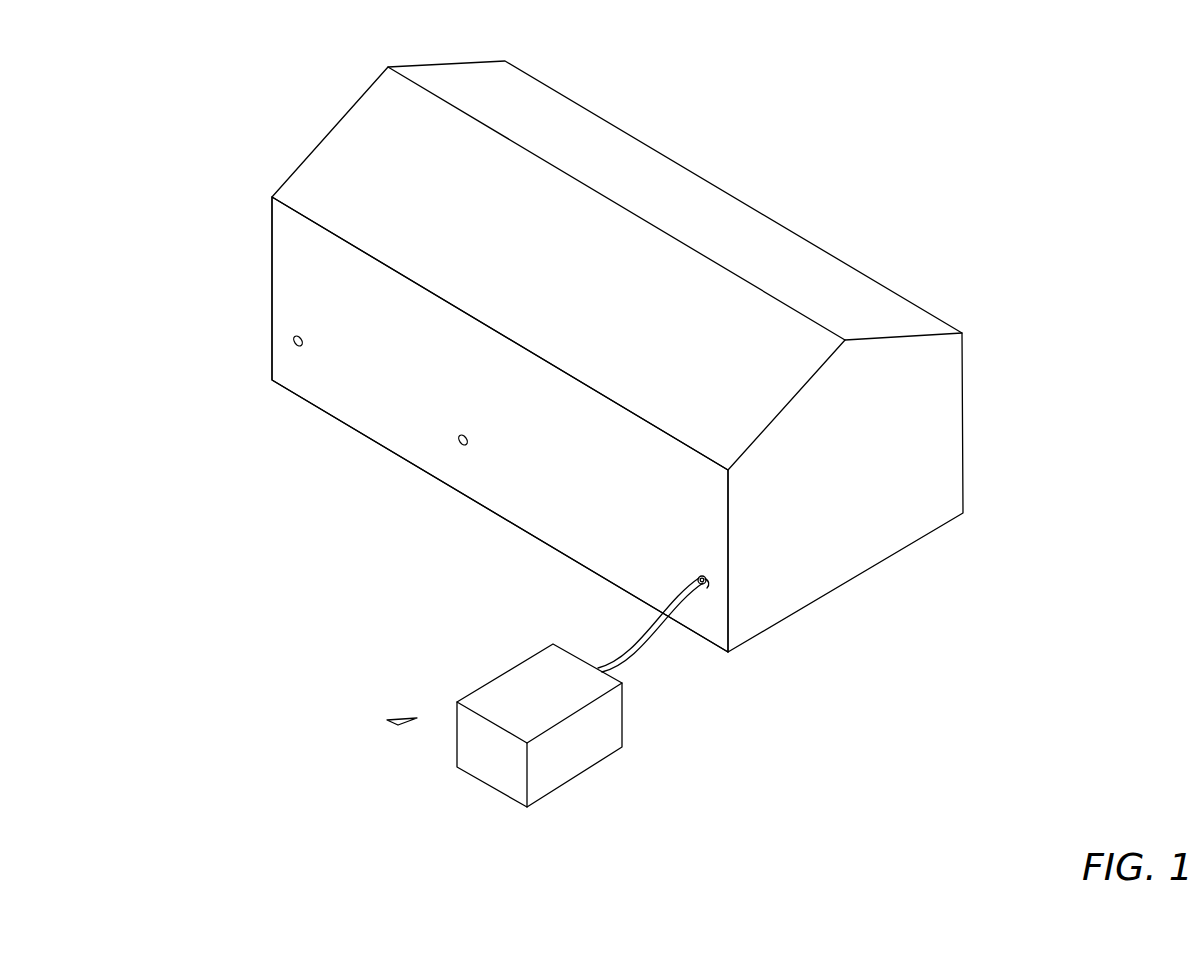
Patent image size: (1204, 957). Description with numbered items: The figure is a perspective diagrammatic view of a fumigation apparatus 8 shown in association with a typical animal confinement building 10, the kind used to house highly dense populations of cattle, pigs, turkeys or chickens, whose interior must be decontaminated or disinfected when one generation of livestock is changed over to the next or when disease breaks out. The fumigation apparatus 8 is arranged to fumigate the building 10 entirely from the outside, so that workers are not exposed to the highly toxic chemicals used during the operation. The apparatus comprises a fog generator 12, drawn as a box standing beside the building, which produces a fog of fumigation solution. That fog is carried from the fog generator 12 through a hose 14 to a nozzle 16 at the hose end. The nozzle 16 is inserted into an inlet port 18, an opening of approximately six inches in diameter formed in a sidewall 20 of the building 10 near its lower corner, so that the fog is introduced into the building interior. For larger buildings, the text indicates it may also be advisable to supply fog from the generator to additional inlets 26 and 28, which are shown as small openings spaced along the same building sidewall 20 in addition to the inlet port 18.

The fumigation apparatus 8 is at (397, 725).
The building 10 is at (860, 513).
The fog generator 12 is at (590, 733).
The hose 14 is at (627, 658).
The nozzle 16 is at (700, 585).
The inlet port 18 is at (707, 587).
The sidewall 20 is at (577, 528).
The inlet 26 is at (463, 448).
The inlet 28 is at (298, 348).